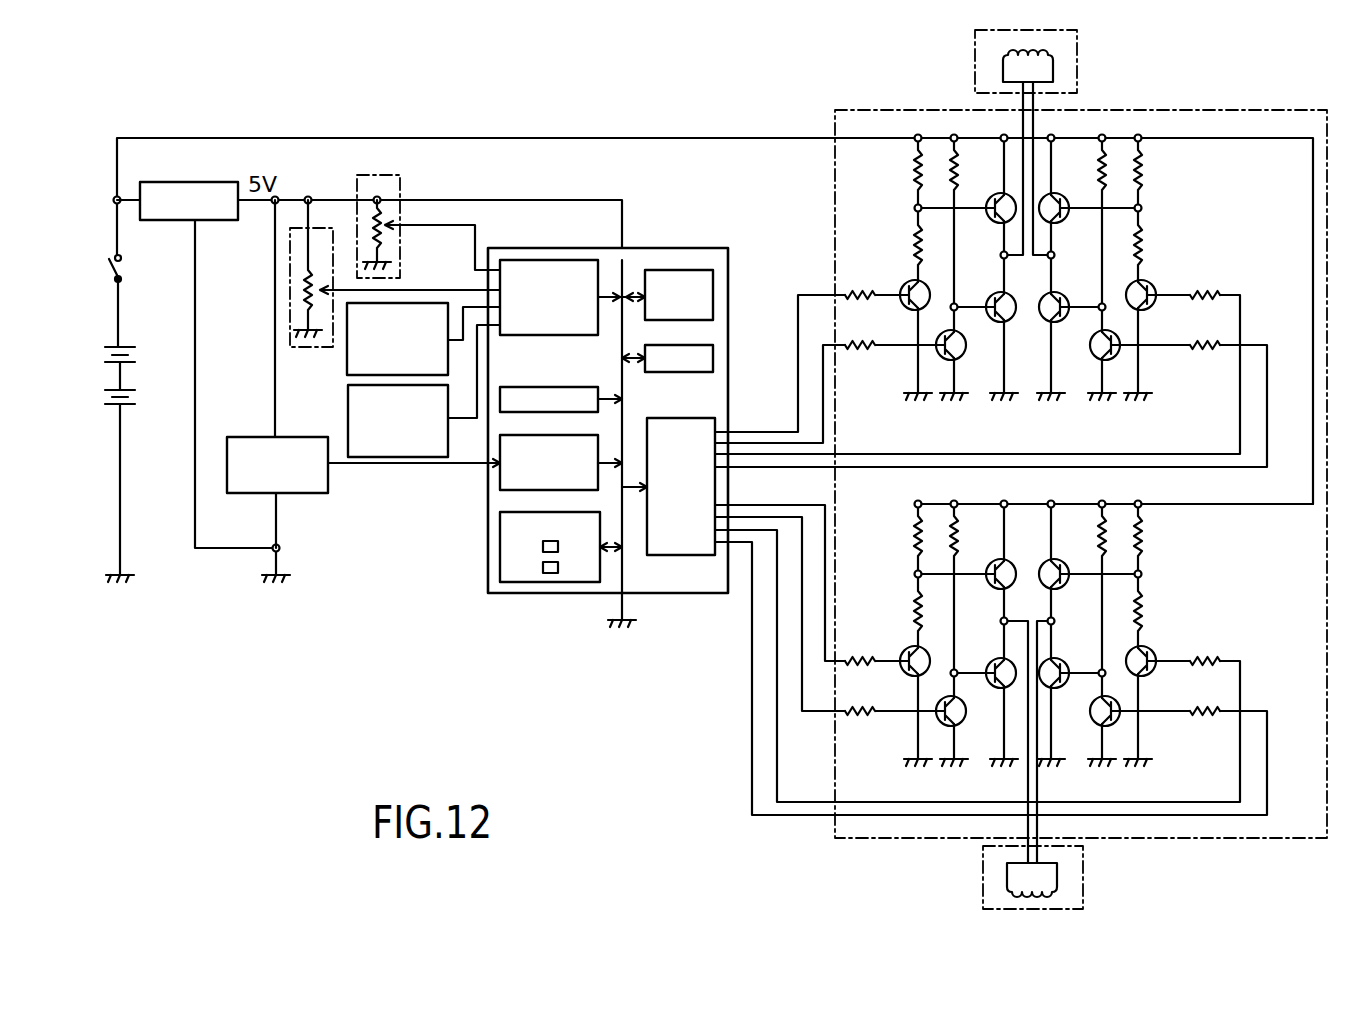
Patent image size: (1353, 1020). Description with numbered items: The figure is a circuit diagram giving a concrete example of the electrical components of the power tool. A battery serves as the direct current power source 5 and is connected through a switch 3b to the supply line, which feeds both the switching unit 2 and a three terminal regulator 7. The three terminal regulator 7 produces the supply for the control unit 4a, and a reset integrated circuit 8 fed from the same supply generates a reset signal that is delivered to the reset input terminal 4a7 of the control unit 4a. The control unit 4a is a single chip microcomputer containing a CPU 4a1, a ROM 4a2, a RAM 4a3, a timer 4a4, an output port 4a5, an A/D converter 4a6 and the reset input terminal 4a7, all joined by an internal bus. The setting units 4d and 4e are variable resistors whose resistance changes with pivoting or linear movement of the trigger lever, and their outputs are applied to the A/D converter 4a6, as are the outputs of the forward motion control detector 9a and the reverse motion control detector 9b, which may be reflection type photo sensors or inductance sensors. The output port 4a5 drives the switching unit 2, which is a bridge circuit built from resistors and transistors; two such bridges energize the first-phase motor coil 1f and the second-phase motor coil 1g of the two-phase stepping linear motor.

The first-phase motor coil 1f is at (975, 46).
The second-phase motor coil 1g is at (983, 877).
The switching unit 2 is at (1240, 108).
The power switch 3b is at (112, 268).
The control unit 4a is at (672, 247).
The CPU 4a1 is at (713, 285).
The ROM 4a2 is at (550, 387).
The RAM 4a3 is at (500, 562).
The timer 4a4 is at (713, 358).
The output port 4a5 is at (700, 418).
The A/D converter 4a6 is at (553, 259).
The reset input terminal 4a7 is at (498, 478).
The reciprocal movement speed setting unit 4d is at (313, 348).
The setting unit 4e is at (400, 186).
The direct current power source 5 is at (115, 415).
The three terminal regulator 7 is at (218, 221).
The reset integrated circuit 8 is at (253, 437).
The forward motion control detector 9a is at (347, 355).
The reverse motion control detector 9b is at (348, 408).